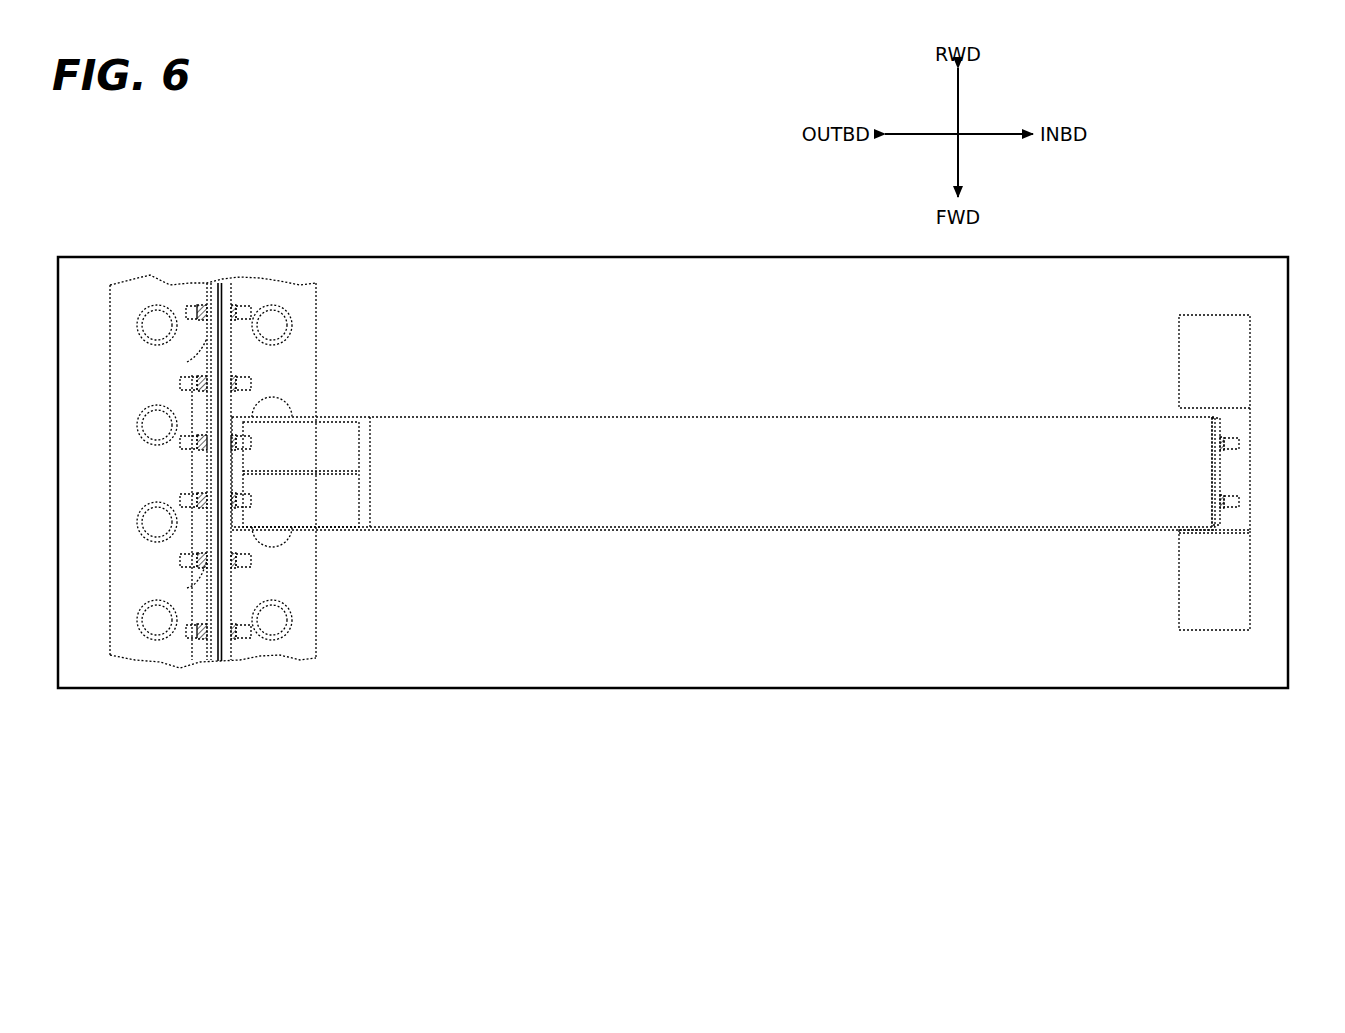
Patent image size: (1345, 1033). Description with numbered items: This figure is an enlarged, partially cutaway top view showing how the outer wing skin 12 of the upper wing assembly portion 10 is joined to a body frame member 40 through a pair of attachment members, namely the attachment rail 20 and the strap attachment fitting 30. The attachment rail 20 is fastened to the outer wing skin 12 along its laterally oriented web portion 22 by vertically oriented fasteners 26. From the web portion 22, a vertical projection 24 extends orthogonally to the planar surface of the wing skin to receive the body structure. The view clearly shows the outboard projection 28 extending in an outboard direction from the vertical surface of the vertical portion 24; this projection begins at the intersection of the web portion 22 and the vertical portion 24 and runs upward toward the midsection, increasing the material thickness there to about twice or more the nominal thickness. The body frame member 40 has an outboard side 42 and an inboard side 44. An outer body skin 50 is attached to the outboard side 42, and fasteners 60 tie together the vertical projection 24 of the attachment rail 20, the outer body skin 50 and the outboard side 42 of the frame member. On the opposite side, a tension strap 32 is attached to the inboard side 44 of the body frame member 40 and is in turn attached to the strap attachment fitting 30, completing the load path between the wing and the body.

The upper wing assembly portion 10 is at (246, 205).
The outer wing skin 12 is at (614, 283).
The attachment rail 20 is at (207, 403).
The web portion 22 is at (123, 468).
The vertical projection 24 is at (213, 292).
The fasteners 26 is at (272, 622).
The outboard projection 28 is at (203, 533).
The strap attachment fitting 30 is at (1190, 376).
The tension strap 32 is at (1217, 465).
The body frame member 40 is at (720, 458).
The outboard side 42 is at (340, 420).
The inboard side 44 is at (1168, 425).
The outer body skin 50 is at (245, 299).
The fasteners 60 is at (190, 440).